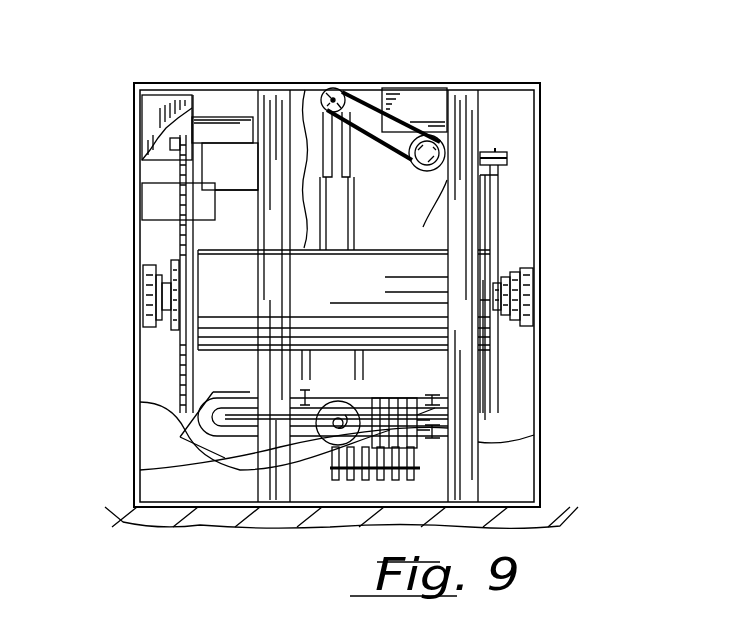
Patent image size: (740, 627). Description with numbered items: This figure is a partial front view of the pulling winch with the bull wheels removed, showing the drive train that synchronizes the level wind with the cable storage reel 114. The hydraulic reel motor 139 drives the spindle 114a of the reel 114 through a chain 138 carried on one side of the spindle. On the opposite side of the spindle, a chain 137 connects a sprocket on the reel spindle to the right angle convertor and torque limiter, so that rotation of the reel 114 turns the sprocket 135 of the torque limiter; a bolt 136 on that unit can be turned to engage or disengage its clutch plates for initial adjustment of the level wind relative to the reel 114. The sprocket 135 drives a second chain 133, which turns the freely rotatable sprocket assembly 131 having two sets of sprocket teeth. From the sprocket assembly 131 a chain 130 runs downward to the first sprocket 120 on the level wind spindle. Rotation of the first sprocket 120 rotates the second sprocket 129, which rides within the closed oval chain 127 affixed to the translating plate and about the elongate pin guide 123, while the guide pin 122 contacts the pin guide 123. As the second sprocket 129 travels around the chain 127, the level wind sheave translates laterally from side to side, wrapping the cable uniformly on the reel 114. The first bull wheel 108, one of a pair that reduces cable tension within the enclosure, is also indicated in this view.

The hydraulic reel motor 139 is at (220, 130).
The sprocket assembly 131 is at (330, 90).
The second chain 133 is at (370, 95).
The sprocket 135 is at (440, 130).
The bolt 136 is at (507, 152).
The chain 130 is at (353, 203).
The chain 137 is at (498, 230).
The chain 138 is at (172, 242).
The spindle 114a is at (157, 270).
The storage reel 114 is at (195, 338).
The chain 127 is at (197, 413).
The guide pin 122 is at (210, 447).
The pin guide 123 is at (210, 462).
The first bull wheel 108 is at (480, 412).
The first sprocket 120 is at (420, 468).
The second sprocket 129 is at (326, 445).